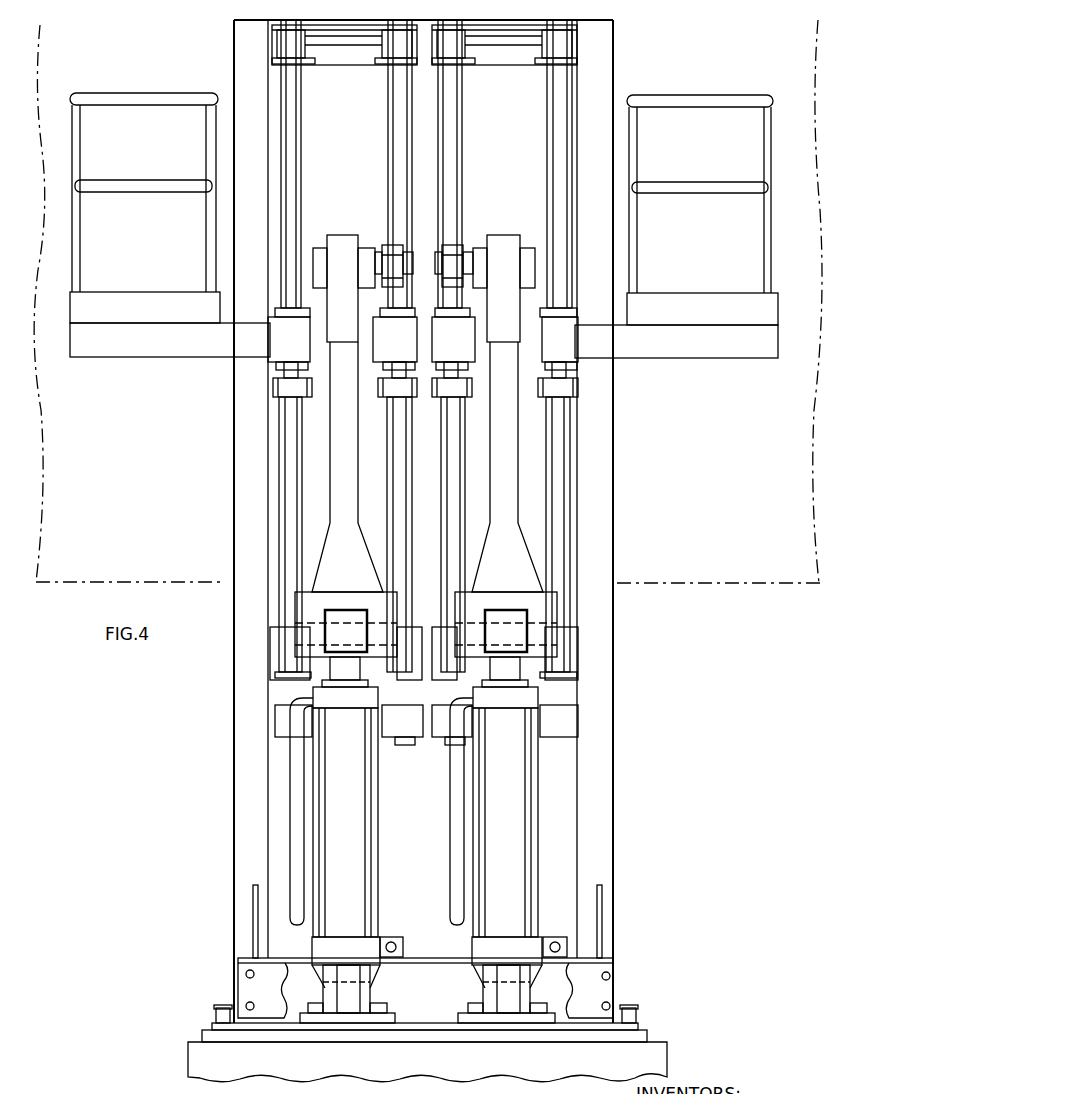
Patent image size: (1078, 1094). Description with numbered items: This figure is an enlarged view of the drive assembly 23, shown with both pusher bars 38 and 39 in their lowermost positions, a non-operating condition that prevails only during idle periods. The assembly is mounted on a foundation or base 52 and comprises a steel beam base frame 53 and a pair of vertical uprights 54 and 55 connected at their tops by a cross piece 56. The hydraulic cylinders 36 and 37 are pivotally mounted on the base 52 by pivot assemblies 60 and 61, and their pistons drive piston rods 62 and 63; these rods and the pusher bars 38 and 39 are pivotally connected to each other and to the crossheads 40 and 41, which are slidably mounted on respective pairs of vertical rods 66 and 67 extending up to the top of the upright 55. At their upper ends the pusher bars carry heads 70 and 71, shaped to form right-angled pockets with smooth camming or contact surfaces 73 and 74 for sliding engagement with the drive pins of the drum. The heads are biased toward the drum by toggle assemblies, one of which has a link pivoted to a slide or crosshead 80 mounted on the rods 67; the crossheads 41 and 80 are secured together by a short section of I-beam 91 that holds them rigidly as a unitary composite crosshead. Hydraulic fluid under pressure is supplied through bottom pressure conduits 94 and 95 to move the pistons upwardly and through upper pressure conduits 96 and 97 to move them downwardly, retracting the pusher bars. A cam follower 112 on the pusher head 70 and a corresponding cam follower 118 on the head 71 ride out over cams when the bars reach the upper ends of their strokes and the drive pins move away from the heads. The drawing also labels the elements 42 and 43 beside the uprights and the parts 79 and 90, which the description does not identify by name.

The drive assembly 23 is at (647, 557).
The hydraulic cylinder 36 is at (349, 797).
The hydraulic cylinder 37 is at (513, 797).
The pusher bar 38 is at (347, 467).
The pusher bar 39 is at (507, 467).
The crosshead 40 is at (296, 641).
The crosshead 41 is at (556, 641).
The side platform 42 is at (154, 352).
The side platform 43 is at (732, 352).
The base 52 is at (656, 1053).
The steel beam base frame 53 is at (600, 990).
The vertical upright 54 is at (242, 846).
The vertical upright 55 is at (613, 776).
The cross piece 56 is at (349, 65).
The pivot assembly 60 is at (402, 996).
The pivot assembly 61 is at (558, 996).
The piston rod 62 is at (328, 668).
The piston rod 63 is at (522, 666).
The vertical rods 66 is at (388, 150).
The vertical rods 67 is at (547, 150).
The head 70 is at (341, 236).
The head 71 is at (502, 240).
The camming or contact surface 73 is at (334, 297).
The camming or contact surface 74 is at (512, 300).
The bearing block 79 is at (410, 330).
The slide or crosshead 80 is at (568, 348).
The rod sleeve 90 is at (285, 477).
The I-beam section 91 is at (540, 483).
The bottom pressure conduit 94 is at (388, 936).
The bottom pressure conduit 95 is at (549, 936).
The upper pressure conduit 96 is at (290, 768).
The upper pressure conduit 97 is at (452, 796).
The cam follower 112 is at (386, 250).
The cam follower 118 is at (461, 250).